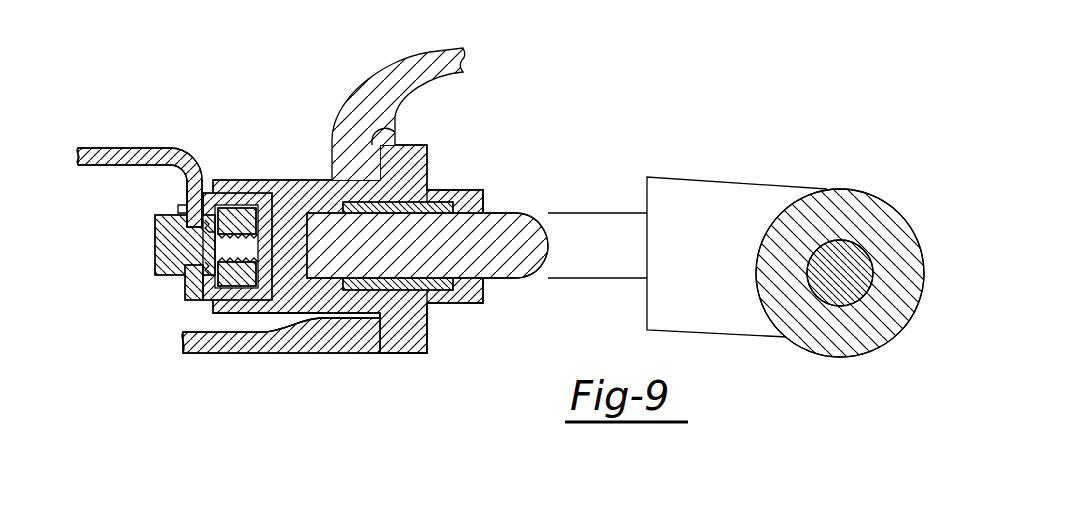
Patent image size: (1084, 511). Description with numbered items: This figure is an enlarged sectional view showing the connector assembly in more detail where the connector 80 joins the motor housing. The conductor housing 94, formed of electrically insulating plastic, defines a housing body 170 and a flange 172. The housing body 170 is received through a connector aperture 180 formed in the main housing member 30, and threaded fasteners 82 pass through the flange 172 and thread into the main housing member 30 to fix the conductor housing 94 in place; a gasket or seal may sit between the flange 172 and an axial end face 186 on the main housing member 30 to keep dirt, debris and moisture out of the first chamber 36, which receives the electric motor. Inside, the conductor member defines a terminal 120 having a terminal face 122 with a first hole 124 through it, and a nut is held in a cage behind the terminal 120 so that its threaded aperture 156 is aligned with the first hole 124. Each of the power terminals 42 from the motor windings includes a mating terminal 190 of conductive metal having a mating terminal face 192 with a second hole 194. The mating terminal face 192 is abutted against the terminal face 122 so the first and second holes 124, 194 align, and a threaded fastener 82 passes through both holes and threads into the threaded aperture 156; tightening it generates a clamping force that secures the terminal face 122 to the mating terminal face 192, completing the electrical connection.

The main housing member 30 is at (248, 345).
The first chamber 36 is at (202, 322).
The power terminals 42 is at (113, 150).
The connector 80 is at (601, 199).
The threaded fasteners 82 is at (165, 250).
The conductor housing 94 is at (482, 200).
The terminal 120 is at (205, 278).
The terminal face 122 is at (200, 285).
The first hole 124 is at (240, 228).
The threaded aperture 156 is at (270, 240).
The housing body 170 is at (305, 192).
The flange 172 is at (407, 325).
The connector aperture 180 is at (348, 315).
The axial end face 186 is at (395, 133).
The mating terminal 190 is at (193, 196).
The mating terminal face 192 is at (205, 222).
The second hole 194 is at (208, 232).